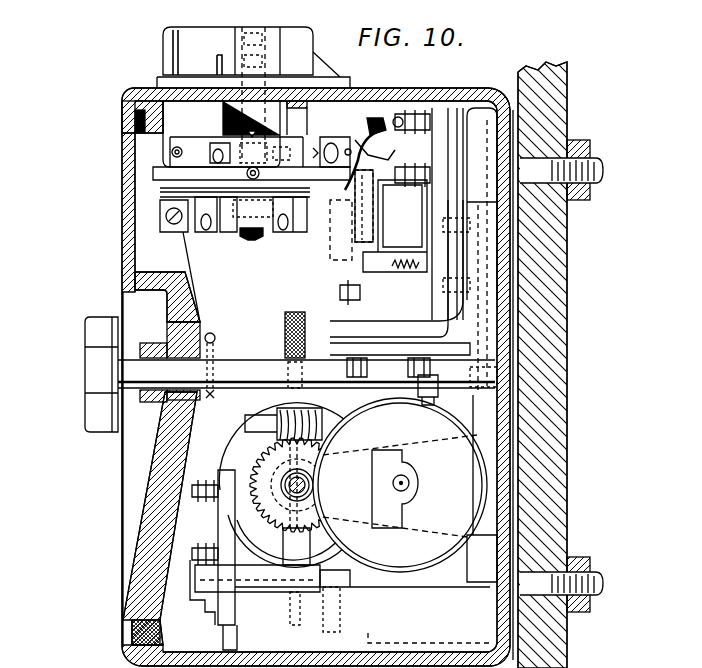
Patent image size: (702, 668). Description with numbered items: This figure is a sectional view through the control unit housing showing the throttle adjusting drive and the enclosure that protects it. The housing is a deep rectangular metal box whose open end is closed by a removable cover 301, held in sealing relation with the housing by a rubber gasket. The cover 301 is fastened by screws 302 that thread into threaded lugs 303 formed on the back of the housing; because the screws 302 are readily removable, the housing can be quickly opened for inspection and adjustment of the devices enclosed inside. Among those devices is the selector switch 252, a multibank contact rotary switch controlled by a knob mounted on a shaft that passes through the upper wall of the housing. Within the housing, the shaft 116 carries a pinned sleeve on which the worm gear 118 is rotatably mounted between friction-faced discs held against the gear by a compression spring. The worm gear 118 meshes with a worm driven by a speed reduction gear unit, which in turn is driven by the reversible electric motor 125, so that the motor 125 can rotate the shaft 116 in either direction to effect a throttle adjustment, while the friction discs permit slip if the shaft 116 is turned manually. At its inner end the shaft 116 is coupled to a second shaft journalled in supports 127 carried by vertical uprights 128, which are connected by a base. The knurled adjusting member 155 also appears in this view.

The removable cover 301 is at (122, 186).
The selector switch 252 is at (237, 232).
The knurled adjusting knob 155 is at (284, 334).
The screws 302 is at (92, 368).
The threaded lugs 303 is at (440, 395).
The shaft 116 is at (308, 480).
The reversible electric motor 125 is at (405, 488).
The worm gear 118 is at (262, 497).
The vertical uprights 128 is at (281, 576).
The supports 127 is at (293, 585).